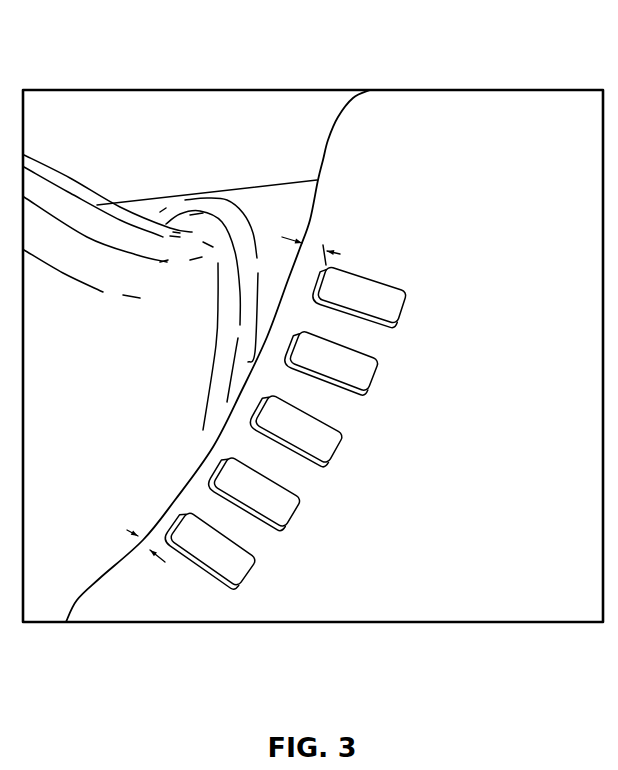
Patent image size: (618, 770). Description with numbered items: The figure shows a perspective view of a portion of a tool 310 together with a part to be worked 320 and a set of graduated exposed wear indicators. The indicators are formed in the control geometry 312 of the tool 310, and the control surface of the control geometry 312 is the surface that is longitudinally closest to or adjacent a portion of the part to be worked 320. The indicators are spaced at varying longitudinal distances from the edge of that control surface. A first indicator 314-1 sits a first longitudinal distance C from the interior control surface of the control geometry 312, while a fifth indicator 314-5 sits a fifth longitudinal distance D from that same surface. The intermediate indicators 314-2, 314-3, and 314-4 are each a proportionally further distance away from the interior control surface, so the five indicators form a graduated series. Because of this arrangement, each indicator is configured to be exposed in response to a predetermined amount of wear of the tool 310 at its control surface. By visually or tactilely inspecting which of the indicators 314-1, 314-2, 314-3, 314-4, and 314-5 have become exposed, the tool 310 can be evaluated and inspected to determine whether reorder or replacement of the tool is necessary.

The tool 310 is at (268, 206).
The control geometry 312 is at (483, 488).
The first indicator 314-1 is at (247, 555).
The intermediate indicator 314-2 is at (287, 488).
The intermediate indicator 314-3 is at (332, 422).
The intermediate indicator 314-4 is at (370, 357).
The fifth indicator 314-5 is at (407, 287).
The part to be worked 320 is at (187, 248).
The fifth longitudinal distance D is at (325, 245).
The first longitudinal distance C is at (148, 555).